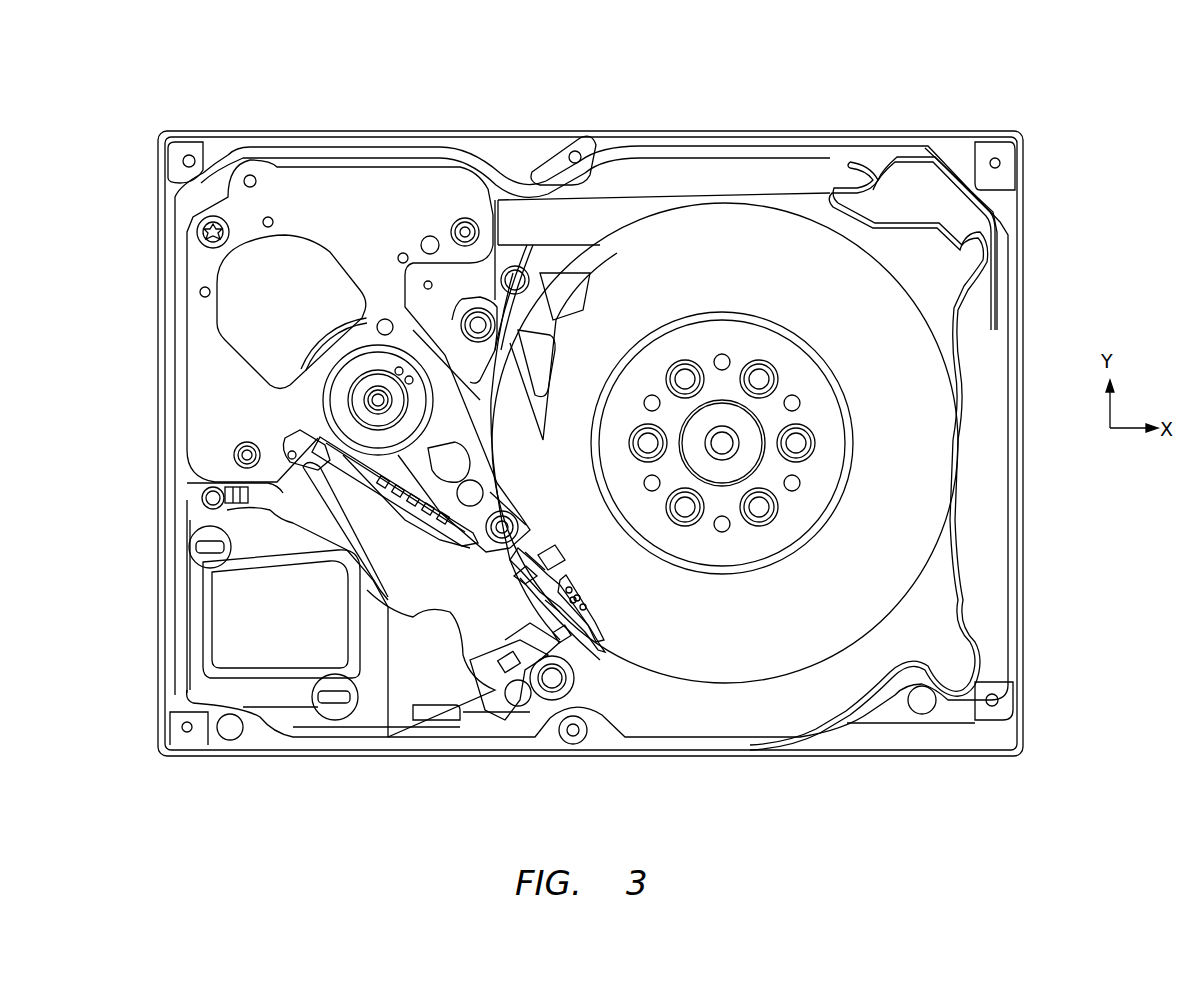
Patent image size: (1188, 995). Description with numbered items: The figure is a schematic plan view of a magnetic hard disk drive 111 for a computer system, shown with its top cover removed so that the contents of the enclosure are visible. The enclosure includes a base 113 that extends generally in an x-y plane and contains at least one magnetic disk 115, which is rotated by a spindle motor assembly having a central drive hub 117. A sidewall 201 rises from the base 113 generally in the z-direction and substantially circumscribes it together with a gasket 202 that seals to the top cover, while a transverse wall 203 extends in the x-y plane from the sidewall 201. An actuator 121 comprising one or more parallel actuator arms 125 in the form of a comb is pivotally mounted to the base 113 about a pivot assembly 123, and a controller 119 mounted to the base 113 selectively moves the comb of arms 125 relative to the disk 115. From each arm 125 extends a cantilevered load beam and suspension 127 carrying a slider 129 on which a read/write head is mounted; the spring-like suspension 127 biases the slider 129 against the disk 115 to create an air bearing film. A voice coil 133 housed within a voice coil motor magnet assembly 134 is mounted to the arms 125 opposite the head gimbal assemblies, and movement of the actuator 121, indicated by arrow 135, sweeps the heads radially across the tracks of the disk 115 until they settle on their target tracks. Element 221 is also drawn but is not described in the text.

The disk drive 111 is at (1072, 70).
The base 113 is at (694, 128).
The magnetic disk 115 is at (925, 485).
The central drive hub 117 is at (830, 350).
The controller 119 is at (232, 598).
The actuator 121 is at (437, 535).
The pivot assembly 123 is at (378, 408).
The actuator arm 125 is at (475, 450).
The suspension 127 is at (545, 572).
The slider 129 is at (562, 612).
The voice coil 133 is at (205, 205).
The voice coil motor magnet assembly 134 is at (222, 335).
The arrow 135 is at (546, 597).
The sidewall 201 is at (528, 148).
The gasket 202 is at (905, 148).
The transverse wall 203 is at (586, 222).
The bracket 221 is at (521, 240).